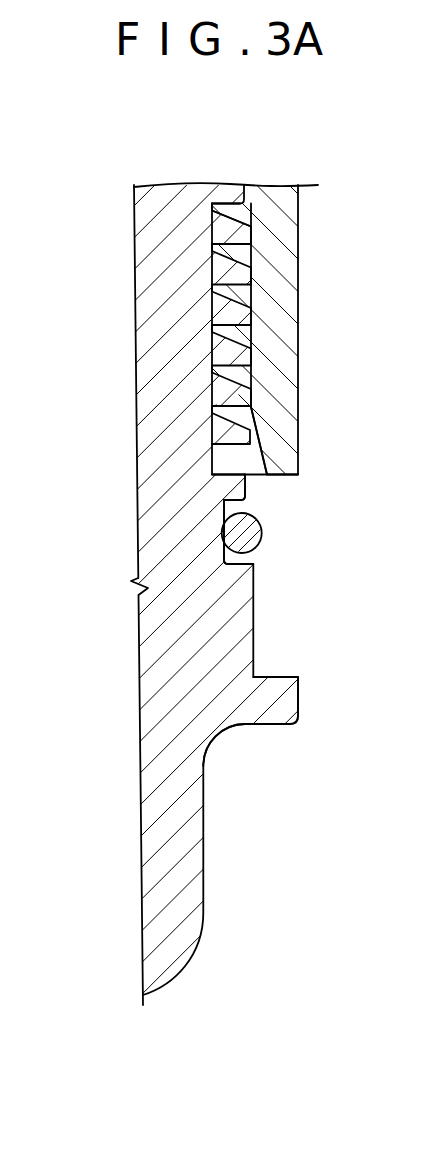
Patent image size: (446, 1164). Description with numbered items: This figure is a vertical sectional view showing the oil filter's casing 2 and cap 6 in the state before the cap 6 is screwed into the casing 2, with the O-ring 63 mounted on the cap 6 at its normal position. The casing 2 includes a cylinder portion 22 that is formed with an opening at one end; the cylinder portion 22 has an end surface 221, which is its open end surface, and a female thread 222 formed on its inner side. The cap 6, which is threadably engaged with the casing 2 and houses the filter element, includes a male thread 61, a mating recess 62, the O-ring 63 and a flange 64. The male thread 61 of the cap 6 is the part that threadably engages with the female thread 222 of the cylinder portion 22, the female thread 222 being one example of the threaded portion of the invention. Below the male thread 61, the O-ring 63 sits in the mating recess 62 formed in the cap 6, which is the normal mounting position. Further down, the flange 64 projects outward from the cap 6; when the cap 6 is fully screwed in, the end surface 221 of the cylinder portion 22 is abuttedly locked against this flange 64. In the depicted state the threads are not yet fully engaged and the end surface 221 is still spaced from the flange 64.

The casing 2 is at (309, 243).
The cylinder portion 22 is at (287, 283).
The female thread 222 is at (233, 212).
The end surface 221 is at (283, 476).
The cap 6 is at (173, 370).
The male thread 61 is at (230, 312).
The mating recess 62 is at (228, 502).
The O-ring 63 is at (245, 537).
The flange 64 is at (285, 703).